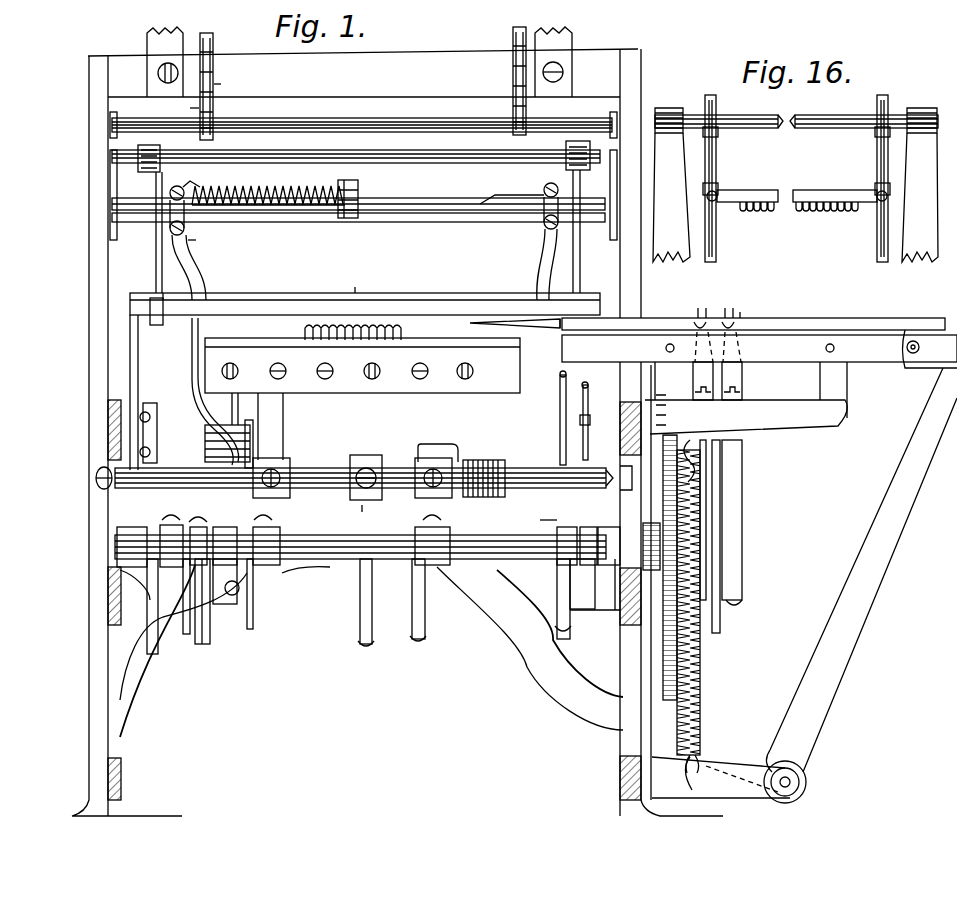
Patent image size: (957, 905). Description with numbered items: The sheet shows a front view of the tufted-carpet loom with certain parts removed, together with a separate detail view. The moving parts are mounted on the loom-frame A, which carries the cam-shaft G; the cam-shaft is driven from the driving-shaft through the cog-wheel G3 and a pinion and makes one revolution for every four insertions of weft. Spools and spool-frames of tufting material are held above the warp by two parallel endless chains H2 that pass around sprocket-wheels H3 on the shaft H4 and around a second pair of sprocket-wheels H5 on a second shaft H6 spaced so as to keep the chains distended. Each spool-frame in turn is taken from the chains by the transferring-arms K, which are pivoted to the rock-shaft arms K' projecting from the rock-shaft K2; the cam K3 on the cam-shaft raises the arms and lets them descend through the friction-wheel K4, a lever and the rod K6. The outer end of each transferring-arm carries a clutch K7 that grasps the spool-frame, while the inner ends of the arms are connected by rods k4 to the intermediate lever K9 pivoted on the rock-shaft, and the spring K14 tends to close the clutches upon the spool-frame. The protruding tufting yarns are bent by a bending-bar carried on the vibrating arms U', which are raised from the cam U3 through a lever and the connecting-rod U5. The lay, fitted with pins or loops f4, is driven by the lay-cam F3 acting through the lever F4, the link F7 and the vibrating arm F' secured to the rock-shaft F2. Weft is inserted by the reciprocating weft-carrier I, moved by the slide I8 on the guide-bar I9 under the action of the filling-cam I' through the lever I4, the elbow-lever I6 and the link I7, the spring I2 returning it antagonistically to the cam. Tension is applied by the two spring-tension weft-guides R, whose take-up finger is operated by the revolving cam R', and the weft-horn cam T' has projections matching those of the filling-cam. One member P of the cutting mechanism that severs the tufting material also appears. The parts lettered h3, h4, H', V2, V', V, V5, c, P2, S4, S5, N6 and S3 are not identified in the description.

In FIG. 1, the loom-frame A is at (82, 280).
In FIG. 1, the endless chains H2 is at (215, 68).
In FIG. 16, the endless chains H2 is at (718, 156).
In FIG. 1, the rack pin h3 is at (183, 106).
In FIG. 1, the rack pin h4 is at (226, 84).
In FIG. 1, the sprocket-wheels H3 is at (215, 112).
In FIG. 1, the sprocket-shaft H4 is at (362, 114).
In FIG. 16, the second pair of sprocket-wheels H5 is at (712, 113).
In FIG. 16, the second shaft H6 is at (791, 110).
In FIG. 16, the brush bar H' is at (797, 191).
In FIG. 1, the shaft V2 is at (363, 189).
In FIG. 1, the post V' is at (144, 219).
In FIG. 1, the vibrating arms U' is at (586, 217).
In FIG. 1, the rock-shaft K2 is at (358, 221).
In FIG. 1, the transferring-arms K is at (357, 243).
In FIG. 1, the rock-shaft arms K' is at (532, 241).
In FIG. 1, the rod K6 is at (186, 242).
In FIG. 1, the spring K14 is at (268, 186).
In FIG. 1, the intermediate lever K9 is at (358, 192).
In FIG. 1, the rods k4 is at (363, 185).
In FIG. 1, the cutting-mechanism member P is at (277, 293).
In FIG. 1, the plate support V is at (356, 280).
In FIG. 1, the post block V5 is at (172, 286).
In FIG. 1, the clutch K7 is at (202, 314).
In FIG. 1, the pointer tip c is at (529, 331).
In FIG. 1, the connecting-rod U5 is at (150, 323).
In FIG. 1, the rod P2 is at (140, 354).
In FIG. 1, the friction-wheel K4 is at (204, 391).
In FIG. 1, the bracket S4 is at (147, 402).
In FIG. 1, the drum S5 is at (202, 430).
In FIG. 1, the vibrating arm F' is at (362, 433).
In FIG. 1, the pins or loops f4 is at (335, 334).
In FIG. 1, the rock-shaft of the lay F2 is at (400, 460).
In FIG. 1, the connecting-rod or link F7 is at (380, 509).
In FIG. 1, the weft-horn cam T' is at (537, 510).
In FIG. 1, the cam-shaft G is at (367, 541).
In FIG. 1, the cam U3 is at (167, 613).
In FIG. 1, the hanger N6 is at (206, 646).
In FIG. 1, the cam K3 is at (250, 647).
In FIG. 1, the lay-cam F3 is at (358, 607).
In FIG. 1, the lever F4 is at (366, 648).
In FIG. 1, the curved leg S3 is at (371, 651).
In FIG. 1, the weft-carrier I is at (753, 313).
In FIG. 1, the guide-bar I9 is at (759, 376).
In FIG. 1, the link I7 is at (930, 349).
In FIG. 1, the slide I8 is at (914, 370).
In FIG. 1, the elbow-lever I6 is at (721, 770).
In FIG. 1, the spring-tension weft-guides R is at (717, 381).
In FIG. 1, the spring I2 is at (715, 696).
In FIG. 1, the lever I4 is at (702, 305).
In FIG. 1, the cog-wheel G3 is at (667, 706).
In FIG. 1, the filling-cam I' is at (703, 606).
In FIG. 1, the revolving take-up cam R' is at (723, 536).